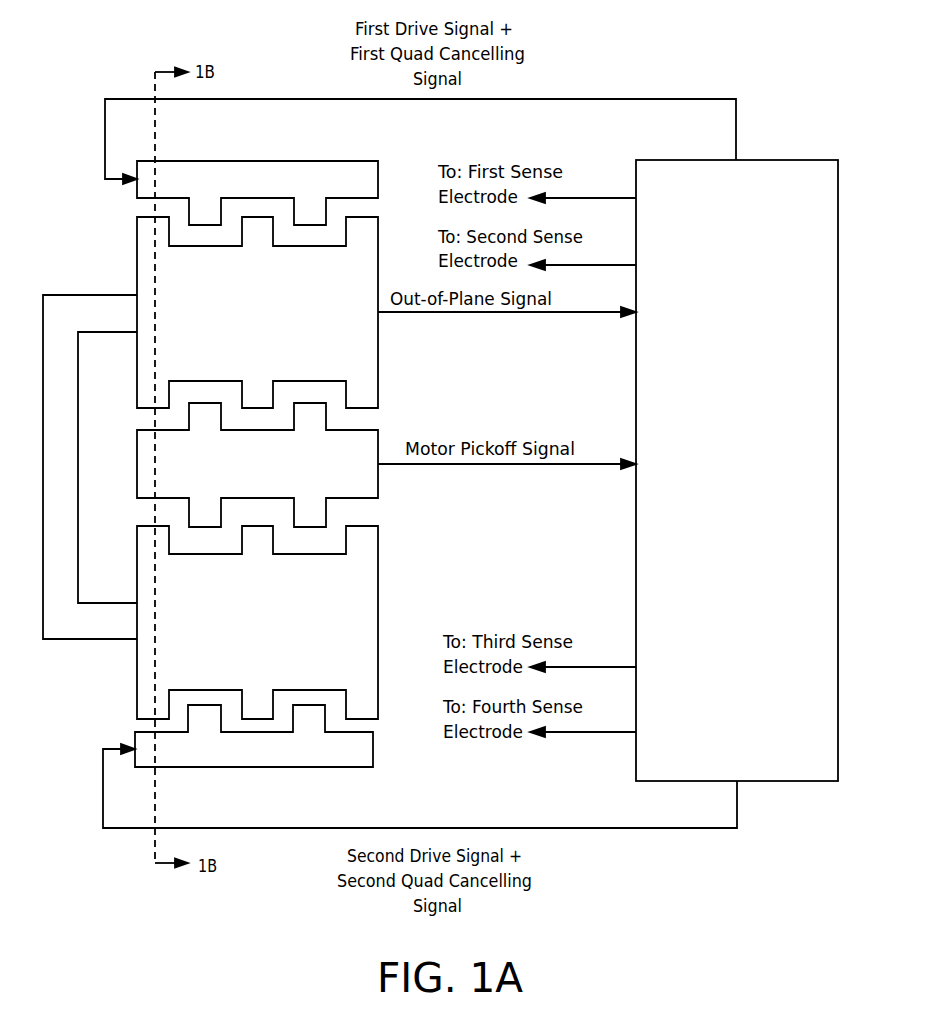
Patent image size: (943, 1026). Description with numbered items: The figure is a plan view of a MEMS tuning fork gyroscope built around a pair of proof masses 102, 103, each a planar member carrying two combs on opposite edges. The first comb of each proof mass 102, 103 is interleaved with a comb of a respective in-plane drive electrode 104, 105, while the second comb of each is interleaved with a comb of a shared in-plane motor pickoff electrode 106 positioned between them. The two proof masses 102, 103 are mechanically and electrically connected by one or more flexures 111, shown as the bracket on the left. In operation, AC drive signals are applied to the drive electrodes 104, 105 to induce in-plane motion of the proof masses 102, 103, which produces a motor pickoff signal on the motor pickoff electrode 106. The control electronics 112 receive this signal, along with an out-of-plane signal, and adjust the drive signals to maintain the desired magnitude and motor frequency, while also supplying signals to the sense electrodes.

The first proof mass 102 is at (378, 335).
The second proof mass 103 is at (378, 579).
The first in-plane drive electrode 104 is at (333, 161).
The second in-plane drive electrode 105 is at (275, 767).
The in-plane motor pickoff electrode 106 is at (137, 475).
The flexures 111 is at (89, 293).
The control electronics 112 is at (763, 159).